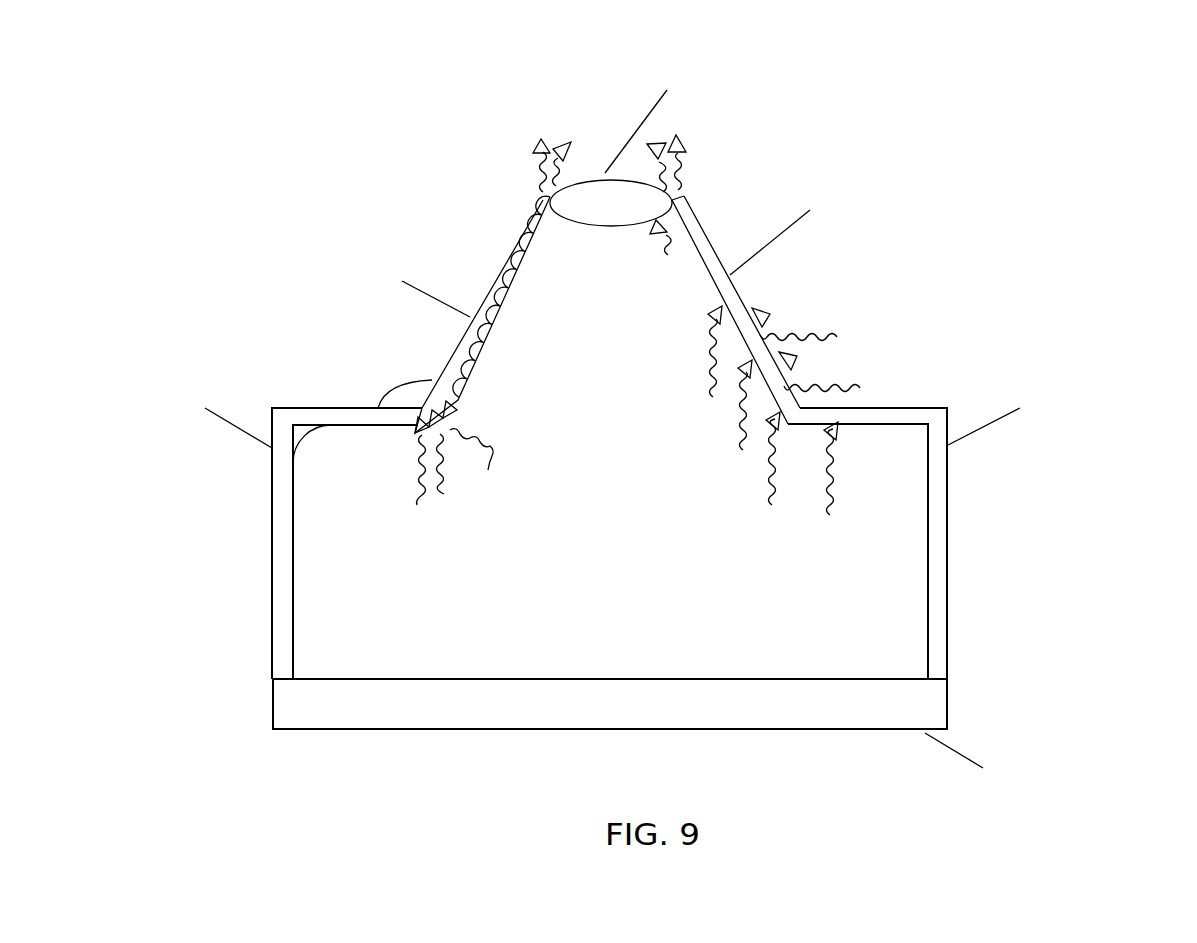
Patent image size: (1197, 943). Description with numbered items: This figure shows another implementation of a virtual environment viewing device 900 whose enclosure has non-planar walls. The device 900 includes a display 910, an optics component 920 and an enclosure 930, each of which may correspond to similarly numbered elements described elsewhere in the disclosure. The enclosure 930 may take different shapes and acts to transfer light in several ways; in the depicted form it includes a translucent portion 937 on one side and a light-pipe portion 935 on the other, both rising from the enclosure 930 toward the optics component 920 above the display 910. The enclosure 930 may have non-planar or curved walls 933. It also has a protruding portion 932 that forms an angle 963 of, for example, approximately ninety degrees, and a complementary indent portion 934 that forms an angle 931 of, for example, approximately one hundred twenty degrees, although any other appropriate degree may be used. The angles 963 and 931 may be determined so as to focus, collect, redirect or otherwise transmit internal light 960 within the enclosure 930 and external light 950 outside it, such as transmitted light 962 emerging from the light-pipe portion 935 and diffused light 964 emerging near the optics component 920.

The virtual environment viewing device 900 is at (1073, 98).
The display 910 is at (863, 732).
The optics component 920 is at (585, 190).
The enclosure 930 is at (644, 488).
The angle 931 is at (387, 390).
The protruding portion 932 is at (322, 397).
The non-planar or curved walls 933 is at (945, 405).
The complementary indent portion 934 is at (413, 352).
The light-pipe portion 935 is at (439, 314).
The translucent portion 937 is at (712, 242).
The external light 950 is at (840, 325).
The internal light 960 is at (755, 498).
The transmitted light 962 is at (528, 140).
The angle 963 is at (308, 461).
The diffused light 964 is at (710, 160).